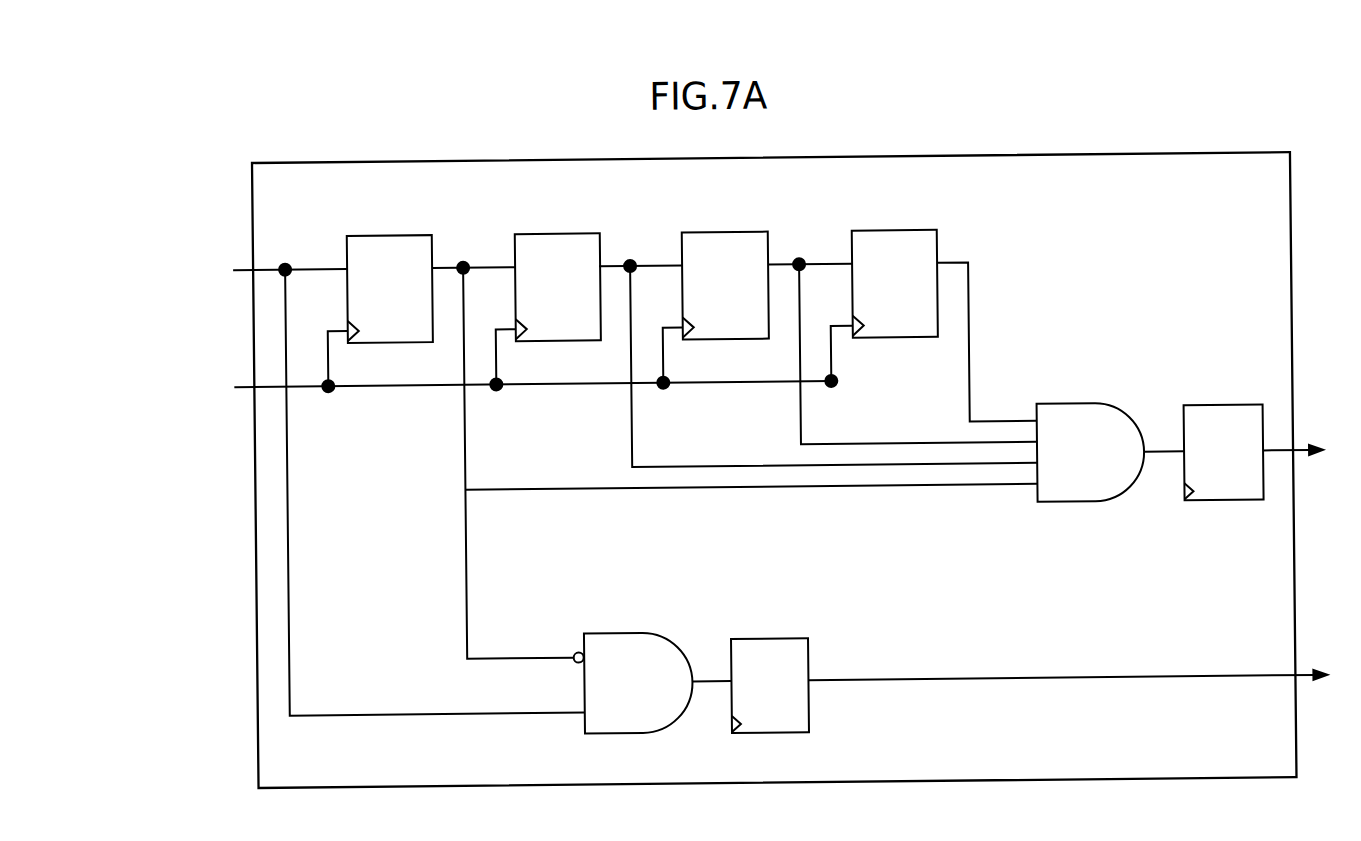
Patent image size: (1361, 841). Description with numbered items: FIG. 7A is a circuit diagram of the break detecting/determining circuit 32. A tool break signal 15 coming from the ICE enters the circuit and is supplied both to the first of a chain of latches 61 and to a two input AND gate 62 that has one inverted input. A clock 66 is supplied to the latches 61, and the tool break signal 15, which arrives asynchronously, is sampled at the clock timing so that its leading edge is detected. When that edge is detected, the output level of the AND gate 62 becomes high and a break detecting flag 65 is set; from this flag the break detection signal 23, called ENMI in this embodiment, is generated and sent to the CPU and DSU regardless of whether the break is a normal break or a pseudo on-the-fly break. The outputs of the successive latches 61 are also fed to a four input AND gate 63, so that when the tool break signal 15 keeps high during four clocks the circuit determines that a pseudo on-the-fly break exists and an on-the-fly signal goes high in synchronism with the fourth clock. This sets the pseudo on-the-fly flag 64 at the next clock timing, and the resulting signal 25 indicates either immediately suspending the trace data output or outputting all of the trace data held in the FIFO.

The break detecting/determining circuit 32 is at (1237, 163).
The tool break signal 15 is at (460, 281).
The clock 66 is at (476, 362).
The latches 61 is at (422, 237).
The four input AND gate 63 is at (1054, 412).
The pseudo on-the-fly flag 64 is at (1197, 415).
The signal 25 is at (1312, 448).
The two input AND gate 62 is at (598, 637).
The break detecting flag 65 is at (791, 646).
The break detection signal 23 is at (1067, 663).